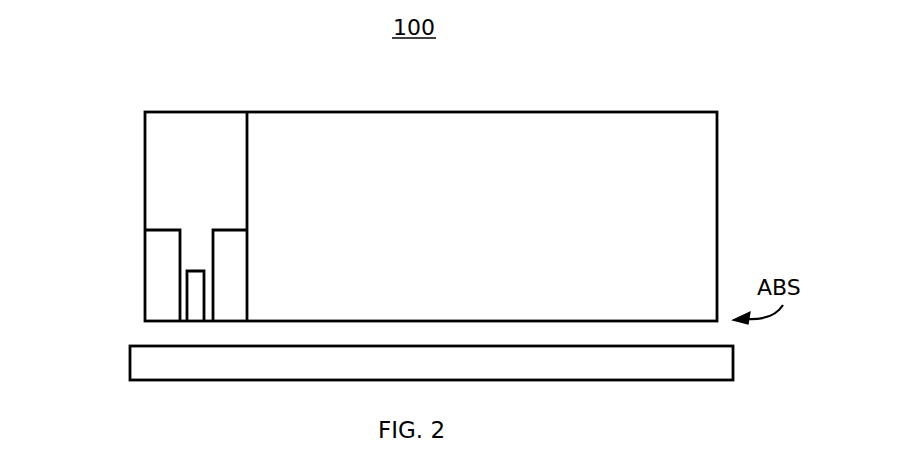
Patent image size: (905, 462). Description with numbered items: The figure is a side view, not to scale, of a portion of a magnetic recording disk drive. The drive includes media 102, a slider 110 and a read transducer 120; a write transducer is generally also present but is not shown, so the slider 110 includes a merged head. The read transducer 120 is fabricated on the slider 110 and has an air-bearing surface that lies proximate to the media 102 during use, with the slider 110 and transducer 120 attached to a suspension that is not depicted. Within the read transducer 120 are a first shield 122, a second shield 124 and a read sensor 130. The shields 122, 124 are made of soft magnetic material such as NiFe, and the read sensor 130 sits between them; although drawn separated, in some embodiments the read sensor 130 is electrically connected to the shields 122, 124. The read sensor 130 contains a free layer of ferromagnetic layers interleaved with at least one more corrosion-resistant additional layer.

The slider 110 is at (717, 187).
The read transducer 120 is at (247, 145).
The first shield 122 is at (232, 230).
The second shield 124 is at (164, 230).
The read sensor 130 is at (196, 322).
The media 102 is at (130, 362).